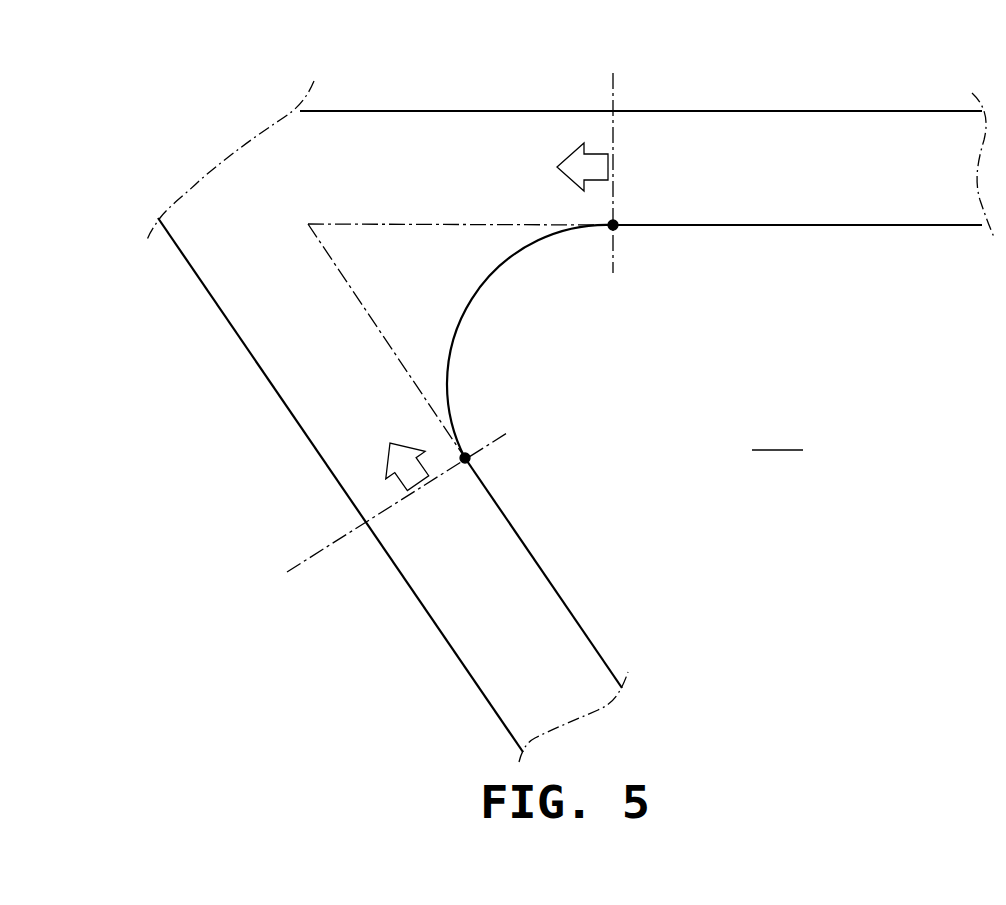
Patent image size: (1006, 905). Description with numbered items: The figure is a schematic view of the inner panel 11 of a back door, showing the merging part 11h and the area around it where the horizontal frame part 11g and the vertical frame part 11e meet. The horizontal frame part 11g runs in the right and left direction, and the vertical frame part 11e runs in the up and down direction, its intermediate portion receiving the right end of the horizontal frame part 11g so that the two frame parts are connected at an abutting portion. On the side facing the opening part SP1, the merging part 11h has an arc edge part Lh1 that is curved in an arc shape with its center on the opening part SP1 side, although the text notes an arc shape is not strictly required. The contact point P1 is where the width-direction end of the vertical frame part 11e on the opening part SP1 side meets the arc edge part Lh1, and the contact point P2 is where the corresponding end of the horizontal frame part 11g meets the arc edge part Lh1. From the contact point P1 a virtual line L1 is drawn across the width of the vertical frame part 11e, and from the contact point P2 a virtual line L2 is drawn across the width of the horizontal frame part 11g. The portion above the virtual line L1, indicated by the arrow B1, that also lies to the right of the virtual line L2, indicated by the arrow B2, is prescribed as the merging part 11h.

The inner panel 11 is at (867, 148).
The merging part 11h is at (396, 154).
The horizontal frame part 11g is at (716, 134).
The vertical frame part 11e is at (467, 609).
The arc edge part Lh1 is at (484, 298).
The virtual line L2 is at (621, 90).
The virtual line L1 is at (320, 564).
The contact point P1 is at (478, 461).
The contact point P2 is at (620, 233).
The opening part SP1 is at (777, 438).
The arrow B1 is at (400, 458).
The arrow B2 is at (565, 167).